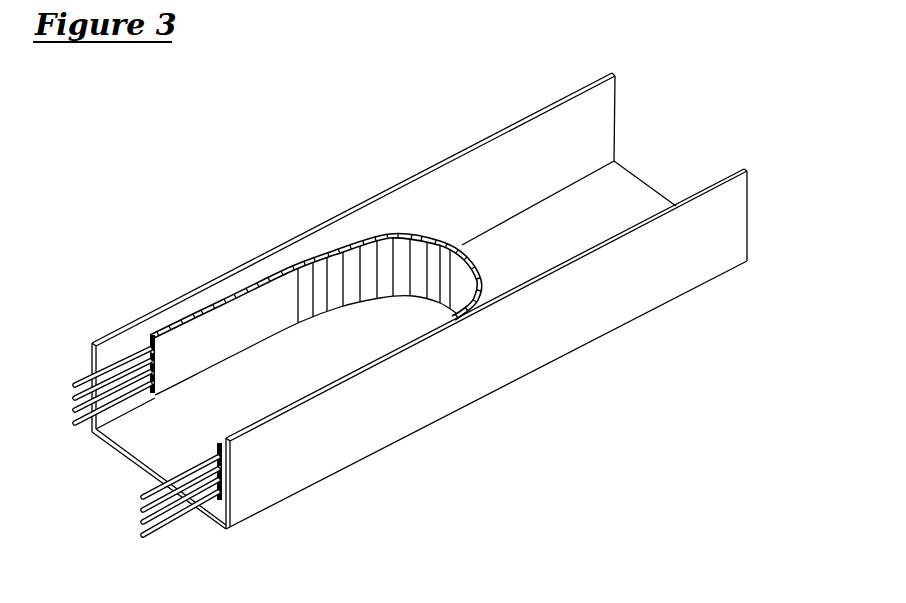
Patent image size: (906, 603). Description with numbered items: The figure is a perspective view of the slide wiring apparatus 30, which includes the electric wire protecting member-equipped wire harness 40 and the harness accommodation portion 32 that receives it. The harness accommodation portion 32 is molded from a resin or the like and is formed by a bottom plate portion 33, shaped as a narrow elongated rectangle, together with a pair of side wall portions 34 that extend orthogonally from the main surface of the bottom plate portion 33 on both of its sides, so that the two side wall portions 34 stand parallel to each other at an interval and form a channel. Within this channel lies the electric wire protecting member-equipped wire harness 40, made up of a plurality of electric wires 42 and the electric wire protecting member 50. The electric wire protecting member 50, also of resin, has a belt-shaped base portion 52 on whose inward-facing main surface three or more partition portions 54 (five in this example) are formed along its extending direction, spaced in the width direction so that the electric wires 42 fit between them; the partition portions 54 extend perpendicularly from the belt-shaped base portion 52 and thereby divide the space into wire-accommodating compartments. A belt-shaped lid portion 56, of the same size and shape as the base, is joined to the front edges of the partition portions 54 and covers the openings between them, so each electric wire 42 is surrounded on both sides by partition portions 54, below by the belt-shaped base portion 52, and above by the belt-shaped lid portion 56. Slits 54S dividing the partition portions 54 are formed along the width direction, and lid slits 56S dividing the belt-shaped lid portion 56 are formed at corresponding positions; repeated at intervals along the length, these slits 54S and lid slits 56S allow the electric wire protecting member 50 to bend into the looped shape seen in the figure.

The slide wiring apparatus 30 is at (357, 183).
The harness accommodation portion 32 is at (692, 289).
The bottom plate portion 33 is at (637, 192).
The side wall portions 34 is at (603, 113).
The electric wire protecting member-equipped wire harness 40 is at (438, 216).
The electric wires 42 is at (164, 524).
The electric wire protecting member 50 is at (480, 272).
The belt-shaped base portion 52 is at (223, 347).
The partition portions 54 is at (223, 493).
The slits 54S is at (290, 258).
The belt-shaped lid portion 56 is at (470, 255).
The lid slits 56S is at (478, 300).